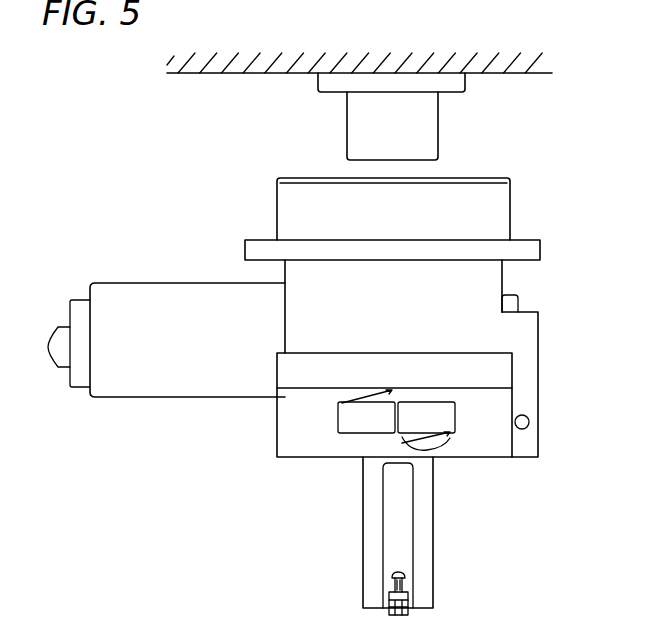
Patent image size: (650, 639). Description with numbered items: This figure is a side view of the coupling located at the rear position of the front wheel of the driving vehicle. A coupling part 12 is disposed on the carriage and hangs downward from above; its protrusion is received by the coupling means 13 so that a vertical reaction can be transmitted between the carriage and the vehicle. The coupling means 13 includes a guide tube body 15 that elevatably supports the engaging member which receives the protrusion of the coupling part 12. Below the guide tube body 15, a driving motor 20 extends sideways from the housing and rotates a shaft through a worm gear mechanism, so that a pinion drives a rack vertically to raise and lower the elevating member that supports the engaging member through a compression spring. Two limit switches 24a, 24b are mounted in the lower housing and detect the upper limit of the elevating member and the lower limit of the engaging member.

The coupling part 12 is at (417, 131).
The coupling means 13 is at (519, 200).
The guide tube body 15 is at (495, 227).
The driving motor 20 is at (157, 293).
The limit switch 24a is at (435, 420).
The limit switch 24b is at (357, 423).